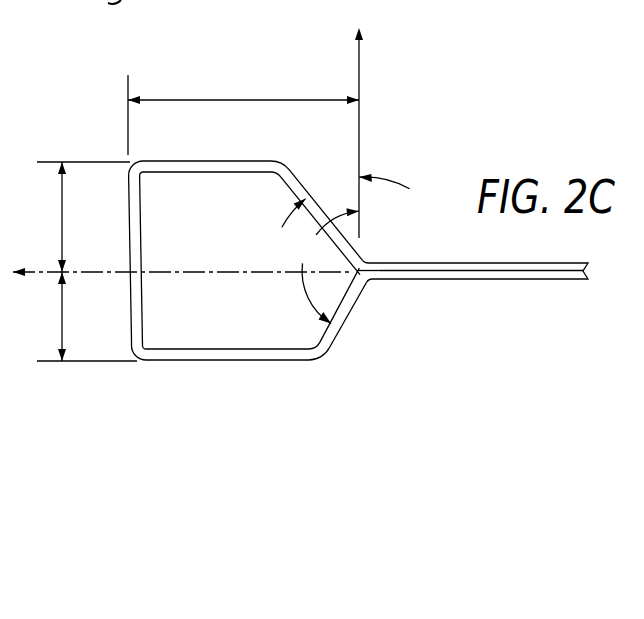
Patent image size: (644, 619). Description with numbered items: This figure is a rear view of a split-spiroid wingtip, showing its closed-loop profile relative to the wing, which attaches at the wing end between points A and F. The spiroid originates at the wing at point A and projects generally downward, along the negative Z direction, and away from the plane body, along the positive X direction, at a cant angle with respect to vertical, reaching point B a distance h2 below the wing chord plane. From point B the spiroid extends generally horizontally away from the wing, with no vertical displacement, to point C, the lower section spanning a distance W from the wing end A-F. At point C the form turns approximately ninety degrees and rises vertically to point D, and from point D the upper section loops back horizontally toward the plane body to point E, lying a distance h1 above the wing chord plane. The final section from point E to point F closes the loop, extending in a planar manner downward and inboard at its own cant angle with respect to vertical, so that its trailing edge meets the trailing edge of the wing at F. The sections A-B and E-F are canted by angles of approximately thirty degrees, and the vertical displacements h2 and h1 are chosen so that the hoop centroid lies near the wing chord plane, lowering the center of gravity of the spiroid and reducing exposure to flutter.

The wing attachment point A is at (372, 280).
The lower transition point B is at (331, 348).
The outboard lower corner C is at (138, 361).
The outboard upper corner D is at (128, 172).
The upper transition point E is at (294, 167).
The wing attachment point F is at (376, 262).
The spanwise width W is at (243, 113).
The upper height h1 is at (81, 217).
The lower height h2 is at (84, 316).
The x axis X is at (181, 259).
The z axis Z is at (360, 121).